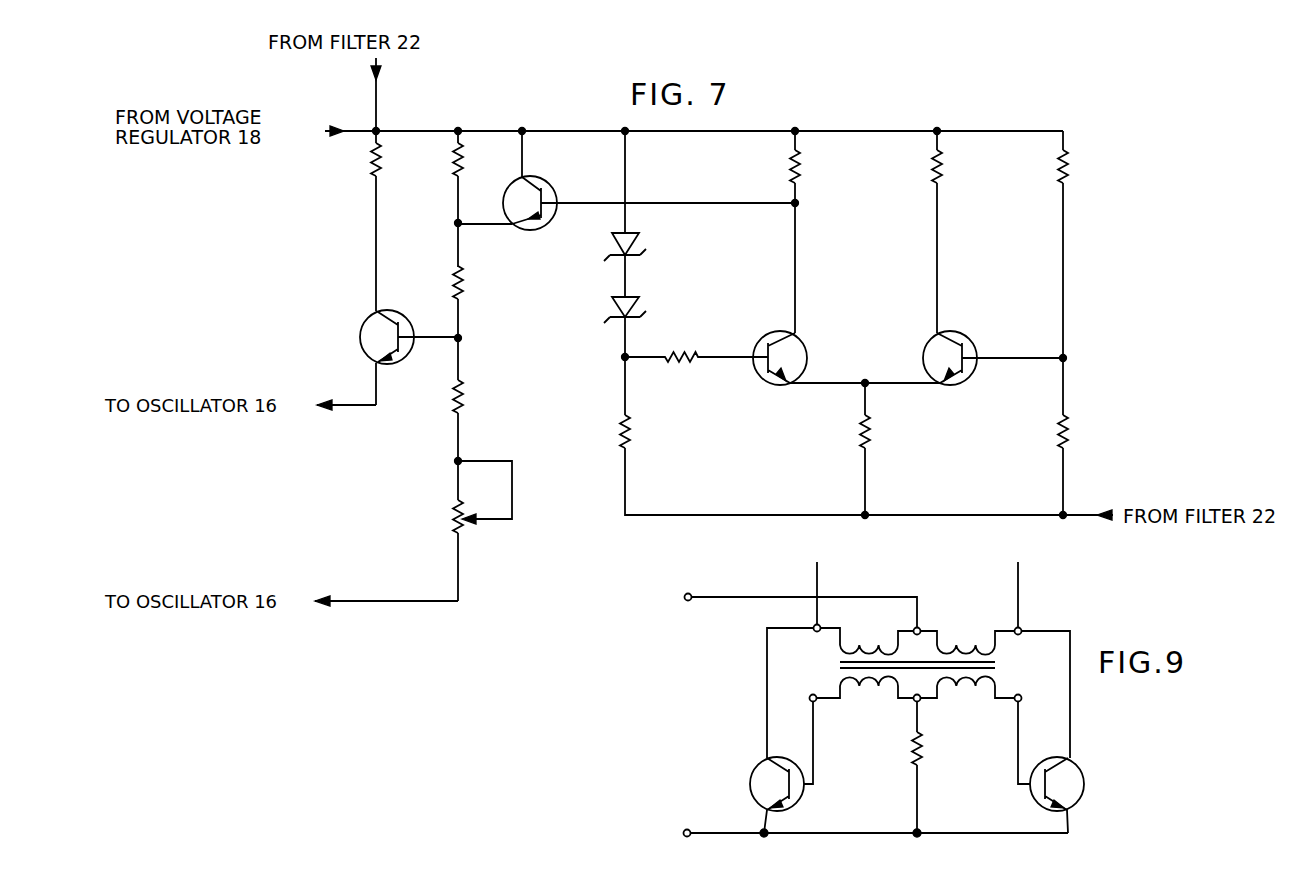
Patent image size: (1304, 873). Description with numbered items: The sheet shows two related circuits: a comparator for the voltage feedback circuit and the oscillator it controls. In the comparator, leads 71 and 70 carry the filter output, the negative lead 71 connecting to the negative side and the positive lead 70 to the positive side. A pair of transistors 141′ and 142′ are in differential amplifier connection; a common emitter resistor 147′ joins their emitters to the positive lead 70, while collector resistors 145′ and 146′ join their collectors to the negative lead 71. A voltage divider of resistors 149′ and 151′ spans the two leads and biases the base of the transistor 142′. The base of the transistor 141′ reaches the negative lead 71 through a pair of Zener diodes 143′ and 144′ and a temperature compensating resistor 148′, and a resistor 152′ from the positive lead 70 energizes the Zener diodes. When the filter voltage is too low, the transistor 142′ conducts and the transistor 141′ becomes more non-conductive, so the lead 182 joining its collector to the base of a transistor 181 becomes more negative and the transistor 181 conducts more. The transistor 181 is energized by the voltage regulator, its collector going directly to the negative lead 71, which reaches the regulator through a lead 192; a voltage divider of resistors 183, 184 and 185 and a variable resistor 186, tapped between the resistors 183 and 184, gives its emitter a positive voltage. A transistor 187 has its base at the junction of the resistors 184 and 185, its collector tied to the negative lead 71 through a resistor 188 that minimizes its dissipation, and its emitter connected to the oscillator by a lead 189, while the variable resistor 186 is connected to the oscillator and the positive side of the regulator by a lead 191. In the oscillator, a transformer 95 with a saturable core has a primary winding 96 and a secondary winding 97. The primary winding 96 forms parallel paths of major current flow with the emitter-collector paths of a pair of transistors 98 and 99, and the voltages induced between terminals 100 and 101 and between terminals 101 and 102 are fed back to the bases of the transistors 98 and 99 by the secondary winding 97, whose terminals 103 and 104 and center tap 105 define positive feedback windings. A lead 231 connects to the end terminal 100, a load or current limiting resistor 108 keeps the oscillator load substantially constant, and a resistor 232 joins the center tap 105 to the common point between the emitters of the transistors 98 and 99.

In FIG. 7, the lead 192 is at (345, 128).
In FIG. 7, the negative lead 71 is at (378, 99).
In FIG. 7, the resistor 188 is at (382, 168).
In FIG. 7, the transistor 187 is at (401, 312).
In FIG. 7, the lead 189 is at (379, 393).
In FIG. 9, the lead 189 is at (703, 597).
In FIG. 7, the resistor 183 is at (474, 140).
In FIG. 7, the resistor 184 is at (464, 292).
In FIG. 7, the resistor 185 is at (463, 400).
In FIG. 7, the variable resistor 186 is at (457, 512).
In FIG. 7, the lead 191 is at (410, 601).
In FIG. 9, the lead 191 is at (749, 832).
In FIG. 7, the transistor 181 is at (540, 177).
In FIG. 7, the lead 182 is at (586, 203).
In FIG. 7, the Zener diode 143′ is at (637, 257).
In FIG. 7, the Zener diode 144′ is at (612, 298).
In FIG. 7, the temperature compensating resistor 148′ is at (698, 356).
In FIG. 7, the resistor 152′ is at (625, 420).
In FIG. 7, the collector resistor 145′ is at (790, 166).
In FIG. 7, the collector resistor 146′ is at (935, 167).
In FIG. 7, the resistor 151′ is at (1069, 168).
In FIG. 7, the transistor 141′ is at (795, 339).
In FIG. 7, the transistor 142′ is at (933, 338).
In FIG. 7, the common emitter resistor 147′ is at (869, 443).
In FIG. 7, the resistor 149′ is at (1056, 440).
In FIG. 7, the positive lead 70 is at (1088, 513).
In FIG. 9, the lead 231 is at (817, 578).
In FIG. 9, the terminal 100 is at (821, 625).
In FIG. 9, the primary winding 96 is at (943, 650).
In FIG. 9, the center tap 101 is at (915, 628).
In FIG. 9, the load or current limiting resistor 108 is at (1018, 583).
In FIG. 9, the terminal 102 is at (1021, 628).
In FIG. 9, the transformer 95 is at (838, 663).
In FIG. 9, the secondary winding 97 is at (951, 681).
In FIG. 9, the terminal 103 is at (812, 695).
In FIG. 9, the center tap 105 is at (915, 701).
In FIG. 9, the resistor 232 is at (920, 748).
In FIG. 9, the terminal 104 is at (1019, 702).
In FIG. 9, the transistor 98 is at (791, 759).
In FIG. 9, the transistor 99 is at (1063, 742).